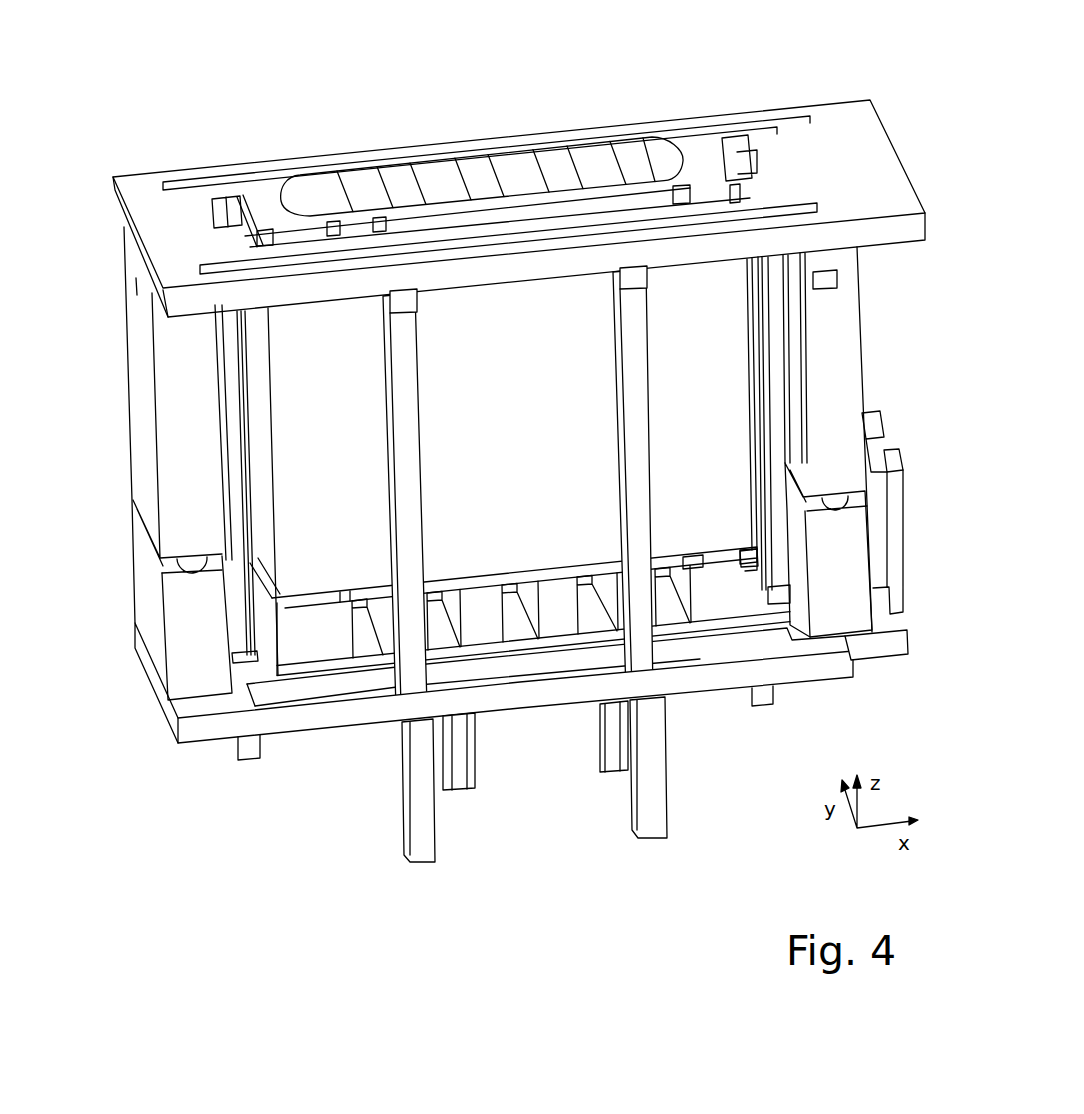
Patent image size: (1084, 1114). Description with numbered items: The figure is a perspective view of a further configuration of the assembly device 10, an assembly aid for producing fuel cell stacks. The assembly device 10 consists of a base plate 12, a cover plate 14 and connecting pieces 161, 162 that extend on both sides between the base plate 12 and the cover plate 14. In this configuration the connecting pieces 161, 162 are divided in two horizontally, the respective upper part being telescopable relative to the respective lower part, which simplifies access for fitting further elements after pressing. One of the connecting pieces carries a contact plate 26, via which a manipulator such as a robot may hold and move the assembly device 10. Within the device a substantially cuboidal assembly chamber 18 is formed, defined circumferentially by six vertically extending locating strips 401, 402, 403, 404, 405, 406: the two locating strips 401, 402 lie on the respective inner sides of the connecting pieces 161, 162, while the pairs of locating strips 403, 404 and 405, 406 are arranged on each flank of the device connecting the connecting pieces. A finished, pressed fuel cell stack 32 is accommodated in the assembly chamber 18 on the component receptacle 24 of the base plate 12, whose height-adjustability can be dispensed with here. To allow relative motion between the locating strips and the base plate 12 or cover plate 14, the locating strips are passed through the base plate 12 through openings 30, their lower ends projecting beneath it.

The assembly device 10 is at (462, 104).
The base plate 12 is at (200, 722).
The cover plate 14 is at (848, 128).
The connecting piece 161 is at (140, 343).
The connecting piece 162 is at (840, 302).
The assembly chamber 18 is at (233, 387).
The component receptacle 24 is at (310, 647).
The contact plate 26 is at (893, 547).
The openings 30 is at (387, 683).
The fuel cell stack 32 is at (560, 395).
The locating strip 401 is at (237, 490).
The locating strip 402 is at (752, 355).
The locating strip 403 is at (422, 845).
The locating strip 404 is at (655, 840).
The locating strip 405 is at (465, 792).
The locating strip 406 is at (620, 780).